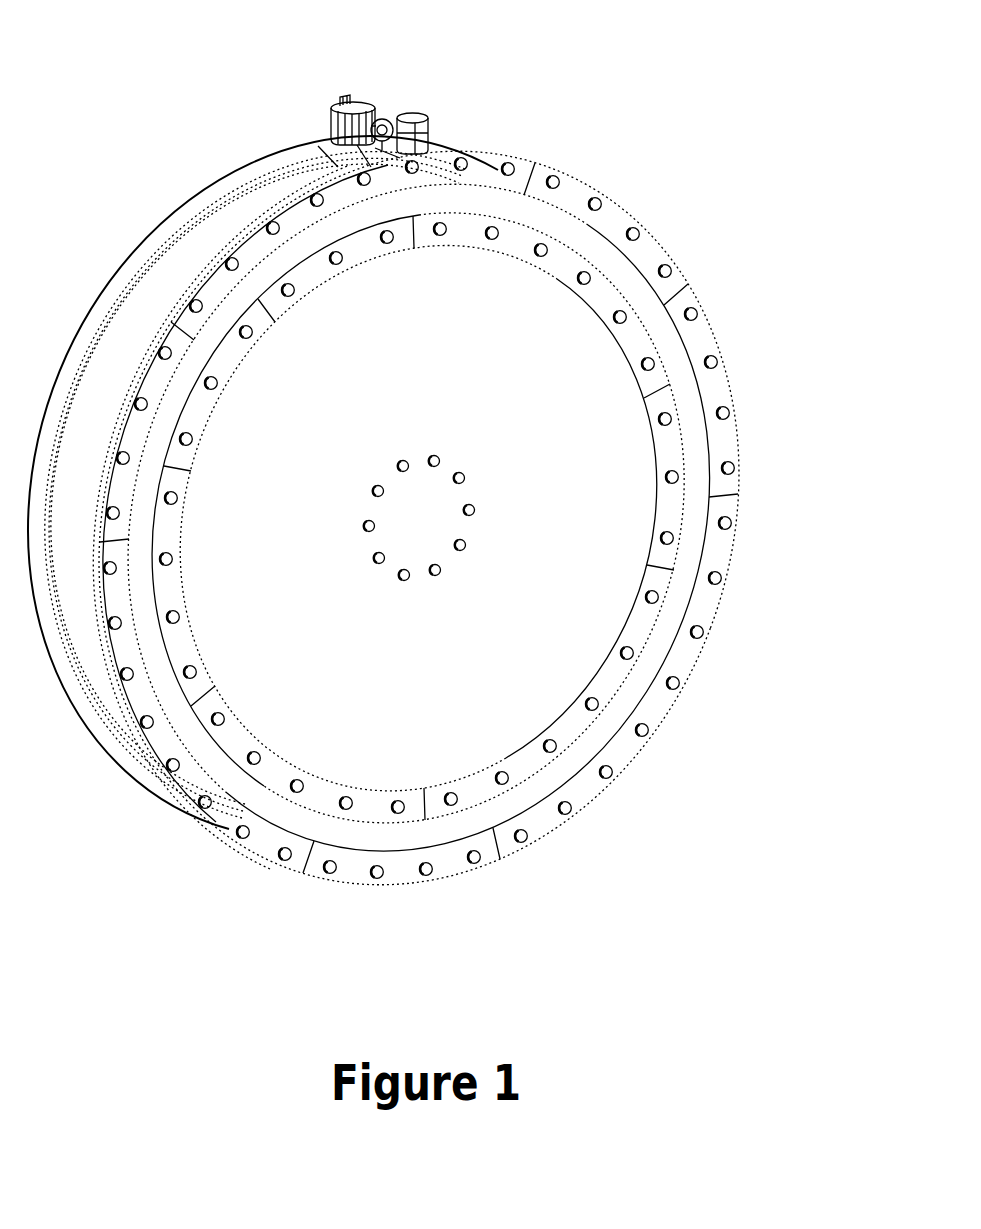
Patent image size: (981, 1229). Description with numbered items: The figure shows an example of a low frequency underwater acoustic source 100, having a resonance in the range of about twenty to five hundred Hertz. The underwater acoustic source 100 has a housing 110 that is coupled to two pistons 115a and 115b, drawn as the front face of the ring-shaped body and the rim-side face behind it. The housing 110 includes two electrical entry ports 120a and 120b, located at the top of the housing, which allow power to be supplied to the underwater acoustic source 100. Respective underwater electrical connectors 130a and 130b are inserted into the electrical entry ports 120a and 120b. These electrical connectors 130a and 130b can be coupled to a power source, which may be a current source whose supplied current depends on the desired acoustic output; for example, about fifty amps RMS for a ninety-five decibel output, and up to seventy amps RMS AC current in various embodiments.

The underwater acoustic source 100 is at (727, 189).
The housing 110 is at (106, 441).
The piston 115a is at (316, 622).
The piston 115b is at (37, 660).
The electrical entry port 120a is at (447, 133).
The electrical entry port 120b is at (330, 134).
The underwater electrical connector 130a is at (332, 95).
The underwater electrical connector 130b is at (410, 108).